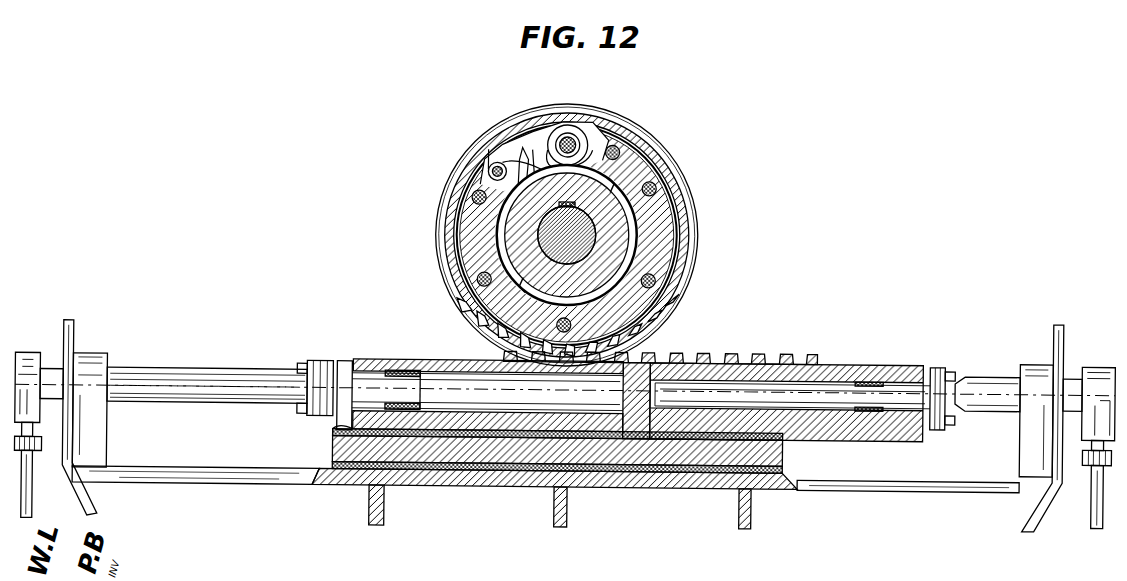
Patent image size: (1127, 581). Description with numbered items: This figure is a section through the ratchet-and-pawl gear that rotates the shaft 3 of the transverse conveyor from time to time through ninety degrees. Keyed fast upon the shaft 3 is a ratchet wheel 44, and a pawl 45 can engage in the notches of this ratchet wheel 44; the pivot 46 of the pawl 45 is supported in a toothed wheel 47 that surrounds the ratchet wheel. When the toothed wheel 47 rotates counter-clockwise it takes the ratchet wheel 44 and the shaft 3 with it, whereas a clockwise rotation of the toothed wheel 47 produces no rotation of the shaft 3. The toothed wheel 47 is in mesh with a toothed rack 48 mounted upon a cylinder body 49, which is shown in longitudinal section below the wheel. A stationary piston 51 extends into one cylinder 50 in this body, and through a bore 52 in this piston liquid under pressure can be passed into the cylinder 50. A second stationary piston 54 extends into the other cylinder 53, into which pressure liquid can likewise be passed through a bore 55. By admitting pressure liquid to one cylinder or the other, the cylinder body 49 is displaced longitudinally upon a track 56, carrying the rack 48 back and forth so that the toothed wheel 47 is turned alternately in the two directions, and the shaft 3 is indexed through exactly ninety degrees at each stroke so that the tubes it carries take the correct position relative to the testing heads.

The shaft 3 is at (564, 248).
The ratchet wheel 44 is at (503, 237).
The pawl 45 is at (528, 150).
The pivot 46 is at (578, 133).
The toothed wheel 47 is at (693, 239).
The toothed rack 48 is at (763, 356).
The cylinder body 49 is at (637, 414).
The cylinder 50 is at (446, 362).
The stationary piston 51 is at (263, 375).
The bore 52 is at (175, 394).
The cylinder 53 is at (658, 362).
The stationary piston 54 is at (827, 387).
The bore 55 is at (887, 378).
The track 56 is at (880, 477).